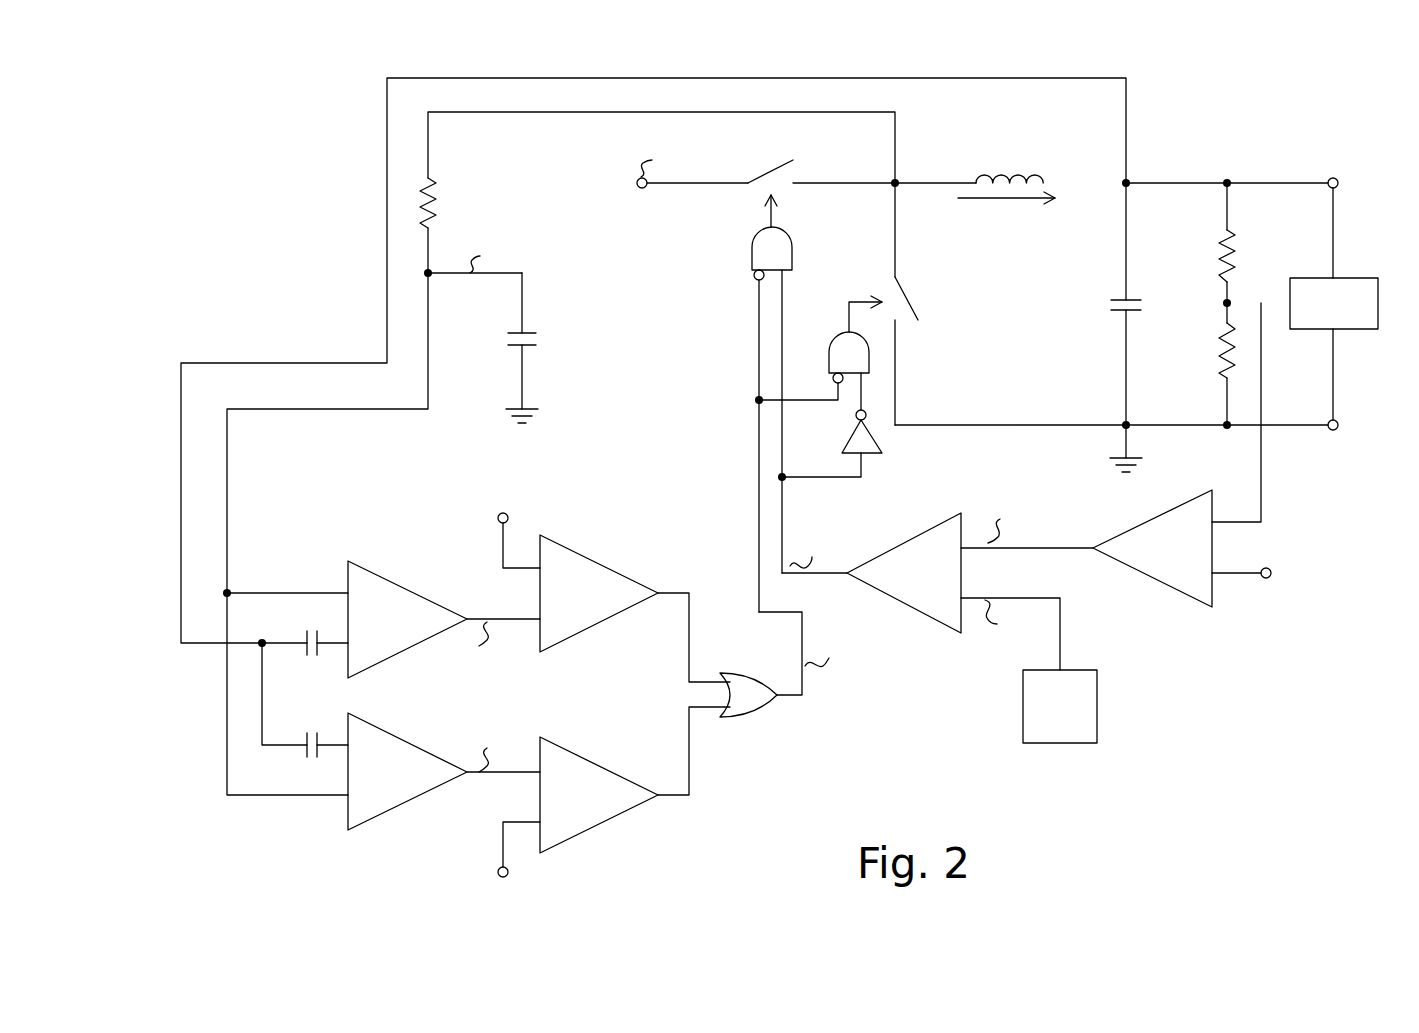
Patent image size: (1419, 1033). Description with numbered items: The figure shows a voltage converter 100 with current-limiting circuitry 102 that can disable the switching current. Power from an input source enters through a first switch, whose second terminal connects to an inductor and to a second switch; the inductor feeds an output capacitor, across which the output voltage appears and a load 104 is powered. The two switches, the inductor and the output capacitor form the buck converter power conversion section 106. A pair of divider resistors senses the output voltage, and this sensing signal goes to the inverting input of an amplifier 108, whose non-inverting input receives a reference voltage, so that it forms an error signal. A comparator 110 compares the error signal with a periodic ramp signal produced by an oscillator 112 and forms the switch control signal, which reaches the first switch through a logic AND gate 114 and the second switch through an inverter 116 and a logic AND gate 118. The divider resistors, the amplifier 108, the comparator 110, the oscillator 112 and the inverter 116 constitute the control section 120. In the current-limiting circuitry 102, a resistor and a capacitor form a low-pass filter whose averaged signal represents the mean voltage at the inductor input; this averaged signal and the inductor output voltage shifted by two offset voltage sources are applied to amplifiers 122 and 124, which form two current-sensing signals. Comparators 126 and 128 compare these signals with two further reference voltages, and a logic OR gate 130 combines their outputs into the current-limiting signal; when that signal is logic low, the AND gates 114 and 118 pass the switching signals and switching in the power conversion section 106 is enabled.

The voltage converter 100 is at (781, 69).
The current-limiting circuitry 102 is at (616, 703).
The load 104 is at (1360, 330).
The power conversion section 106 is at (1039, 367).
The amplifier 108 is at (1111, 535).
The comparator 110 is at (912, 536).
The oscillator 112 is at (1097, 678).
The logic AND gate 114 is at (755, 236).
The inverter 116 is at (872, 452).
The logic AND gate 118 is at (842, 328).
The control section 120 is at (1131, 616).
The amplifier 122 is at (393, 553).
The amplifier 124 is at (393, 705).
The comparator 126 is at (615, 543).
The comparator 128 is at (627, 770).
The logic OR gate 130 is at (763, 712).